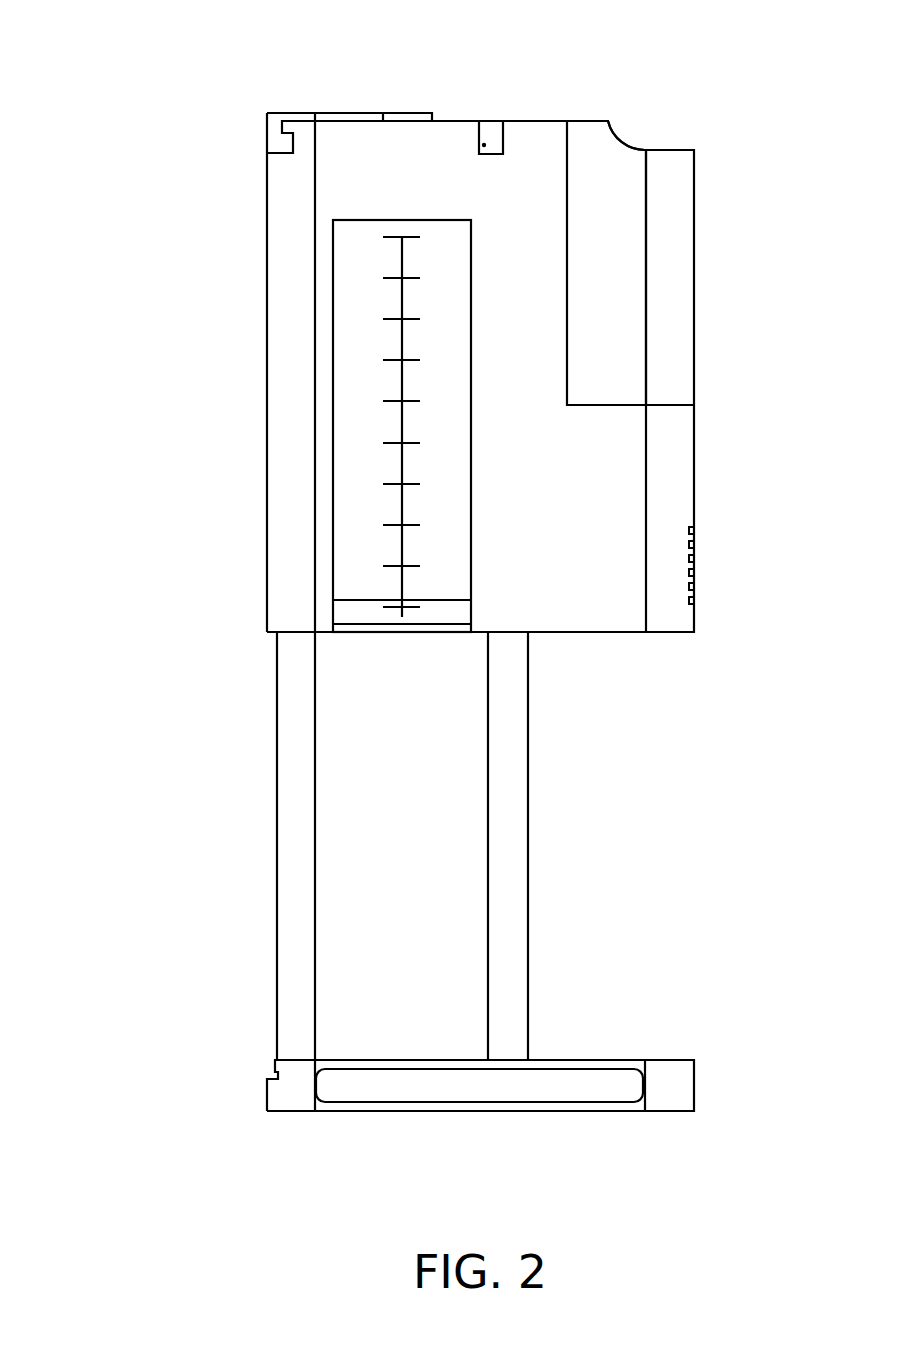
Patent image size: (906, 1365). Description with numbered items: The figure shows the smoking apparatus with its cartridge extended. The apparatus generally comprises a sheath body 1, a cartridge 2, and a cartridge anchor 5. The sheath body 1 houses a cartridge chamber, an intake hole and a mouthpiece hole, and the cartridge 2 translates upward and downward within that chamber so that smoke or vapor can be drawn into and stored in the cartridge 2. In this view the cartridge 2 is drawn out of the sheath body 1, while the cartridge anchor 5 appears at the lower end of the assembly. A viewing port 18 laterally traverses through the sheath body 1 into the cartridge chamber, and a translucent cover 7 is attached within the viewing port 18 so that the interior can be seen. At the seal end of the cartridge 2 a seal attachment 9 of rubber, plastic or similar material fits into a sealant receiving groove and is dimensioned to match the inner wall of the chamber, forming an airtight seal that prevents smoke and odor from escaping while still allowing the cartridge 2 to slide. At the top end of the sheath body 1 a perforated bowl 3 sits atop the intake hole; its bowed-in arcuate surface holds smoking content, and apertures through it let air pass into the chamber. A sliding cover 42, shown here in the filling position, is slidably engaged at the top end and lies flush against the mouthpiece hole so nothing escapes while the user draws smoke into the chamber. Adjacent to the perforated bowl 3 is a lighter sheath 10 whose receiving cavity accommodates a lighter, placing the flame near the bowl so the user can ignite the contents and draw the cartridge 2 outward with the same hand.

The sheath body 1 is at (222, 221).
The cartridge 2 is at (242, 818).
The perforated bowl 3 is at (493, 128).
The cartridge anchor 5 is at (282, 1090).
The translucent cover 7 is at (363, 398).
The seal attachment 9 is at (348, 615).
The lighter sheath 10 is at (630, 160).
The viewing port 18 is at (327, 513).
The sliding cover 42 is at (337, 118).